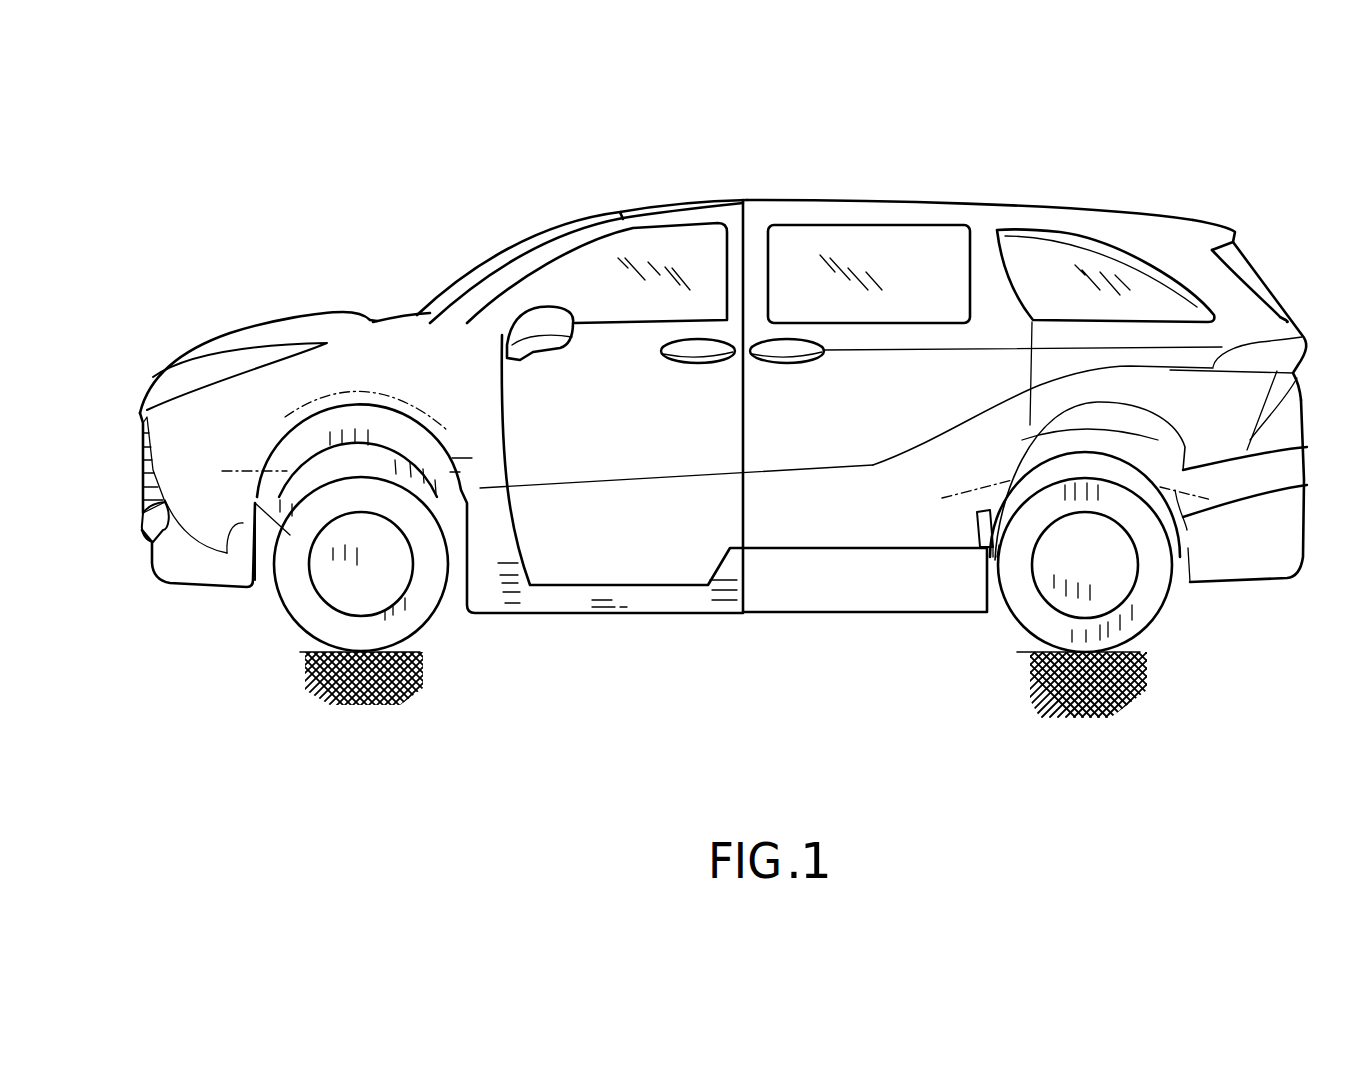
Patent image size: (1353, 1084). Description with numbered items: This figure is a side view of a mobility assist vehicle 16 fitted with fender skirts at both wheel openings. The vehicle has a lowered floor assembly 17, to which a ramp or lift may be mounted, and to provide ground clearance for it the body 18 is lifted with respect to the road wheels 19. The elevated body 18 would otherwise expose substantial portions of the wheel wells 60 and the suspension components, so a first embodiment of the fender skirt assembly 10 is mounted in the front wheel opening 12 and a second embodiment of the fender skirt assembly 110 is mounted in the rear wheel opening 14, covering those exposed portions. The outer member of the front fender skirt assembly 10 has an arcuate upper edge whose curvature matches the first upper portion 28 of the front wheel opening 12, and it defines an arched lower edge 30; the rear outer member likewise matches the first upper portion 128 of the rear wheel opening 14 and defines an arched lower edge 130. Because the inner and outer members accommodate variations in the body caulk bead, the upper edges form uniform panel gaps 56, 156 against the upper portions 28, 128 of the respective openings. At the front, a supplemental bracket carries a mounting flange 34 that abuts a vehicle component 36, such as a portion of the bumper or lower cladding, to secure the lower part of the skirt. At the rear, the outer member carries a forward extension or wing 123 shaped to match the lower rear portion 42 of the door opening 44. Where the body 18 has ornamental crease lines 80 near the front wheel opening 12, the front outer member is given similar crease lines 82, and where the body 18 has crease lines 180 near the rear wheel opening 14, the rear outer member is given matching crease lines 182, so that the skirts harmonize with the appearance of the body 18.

The fender skirt assembly 10 is at (362, 368).
The front wheel opening 12 is at (290, 448).
The rear wheel opening 14 is at (1037, 460).
The mobility assist vehicle 16 is at (810, 177).
The lowered floor assembly 17 is at (587, 614).
The body 18 is at (1200, 233).
The road wheels 19 is at (292, 608).
The first upper portion of front wheel opening 28 is at (418, 432).
The arched lower edge 30 is at (465, 498).
The mounting flange 34 is at (243, 523).
The vehicle component 36 is at (138, 571).
The lower rear portion of door opening 42 is at (955, 548).
The door opening 44 is at (860, 562).
The panel gap 56 is at (352, 410).
The wheel wells 60 is at (267, 496).
The crease lines 80 is at (240, 470).
The crease lines 82 is at (450, 495).
The fender skirt assembly 110 is at (1232, 471).
The forward extension or wing 123 is at (977, 513).
The first upper portion of rear wheel opening 128 is at (1128, 435).
The arched lower edge 130 is at (1299, 487).
The panel gap 156 is at (1177, 470).
The crease lines 180 is at (958, 497).
The crease lines 182 is at (1163, 487).